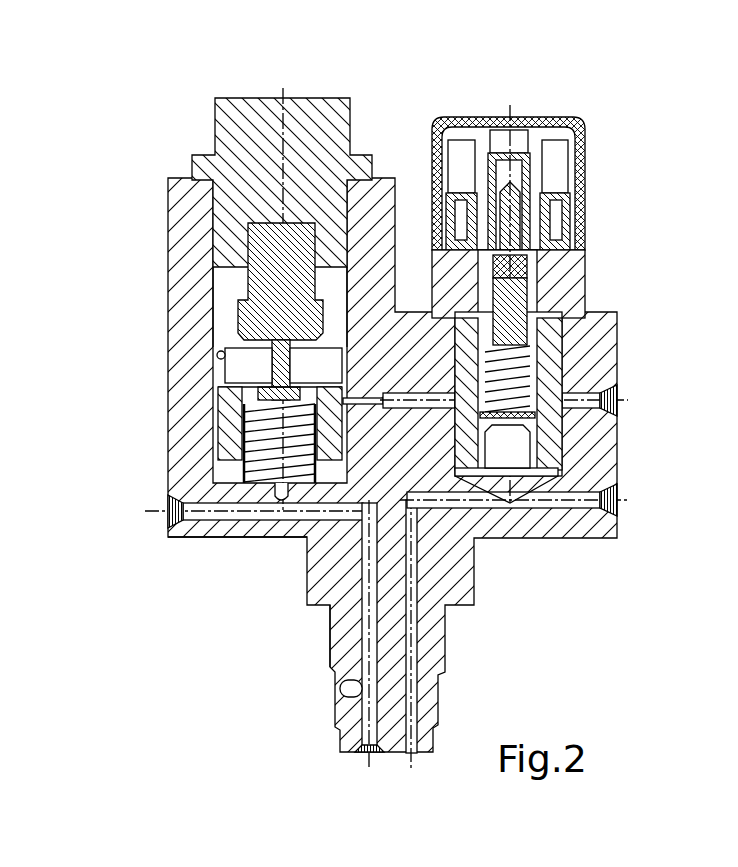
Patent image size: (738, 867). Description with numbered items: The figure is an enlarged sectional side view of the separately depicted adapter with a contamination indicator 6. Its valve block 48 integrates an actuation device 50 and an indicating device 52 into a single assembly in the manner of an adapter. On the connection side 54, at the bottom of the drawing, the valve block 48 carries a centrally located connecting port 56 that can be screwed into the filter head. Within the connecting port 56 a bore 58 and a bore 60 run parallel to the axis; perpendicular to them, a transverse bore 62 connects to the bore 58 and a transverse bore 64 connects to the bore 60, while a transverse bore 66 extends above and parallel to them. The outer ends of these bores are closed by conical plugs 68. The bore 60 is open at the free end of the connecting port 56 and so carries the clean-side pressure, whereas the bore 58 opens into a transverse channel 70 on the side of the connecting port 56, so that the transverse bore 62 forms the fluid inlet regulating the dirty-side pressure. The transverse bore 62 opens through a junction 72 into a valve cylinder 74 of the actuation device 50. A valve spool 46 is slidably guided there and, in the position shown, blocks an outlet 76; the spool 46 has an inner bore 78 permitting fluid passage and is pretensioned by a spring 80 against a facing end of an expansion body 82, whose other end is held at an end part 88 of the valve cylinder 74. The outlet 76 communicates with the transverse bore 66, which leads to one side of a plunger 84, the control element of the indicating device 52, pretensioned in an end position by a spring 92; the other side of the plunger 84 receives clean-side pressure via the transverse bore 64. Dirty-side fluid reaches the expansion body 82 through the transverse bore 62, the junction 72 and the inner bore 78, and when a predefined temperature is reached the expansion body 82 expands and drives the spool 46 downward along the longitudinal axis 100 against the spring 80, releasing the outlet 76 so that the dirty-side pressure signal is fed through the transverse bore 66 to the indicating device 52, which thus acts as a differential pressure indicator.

The contamination indicator 6 is at (737, 193).
The valve spool 46 is at (230, 398).
The valve block 48 is at (437, 503).
The actuation device 50 is at (213, 268).
The indicating device 52 is at (587, 297).
The connection side 54 is at (230, 540).
The connecting port 56 is at (310, 605).
The bore 58 is at (365, 660).
The bore 60 is at (412, 643).
The transverse bore 62 is at (238, 523).
The transverse bore 64 is at (600, 490).
The transverse bore 66 is at (598, 378).
The conical plug 68 is at (165, 512).
The transverse channel 70 is at (347, 692).
The junction 72 is at (257, 503).
The valve cylinder 74 is at (218, 355).
The outlet 76 is at (363, 397).
The inner bore 78 is at (267, 388).
The spring 80 is at (245, 430).
The expansion body 82 is at (250, 322).
The plunger 84 is at (575, 336).
The end part 88 is at (245, 125).
The spring 92 is at (565, 352).
The longitudinal axis 100 is at (283, 88).